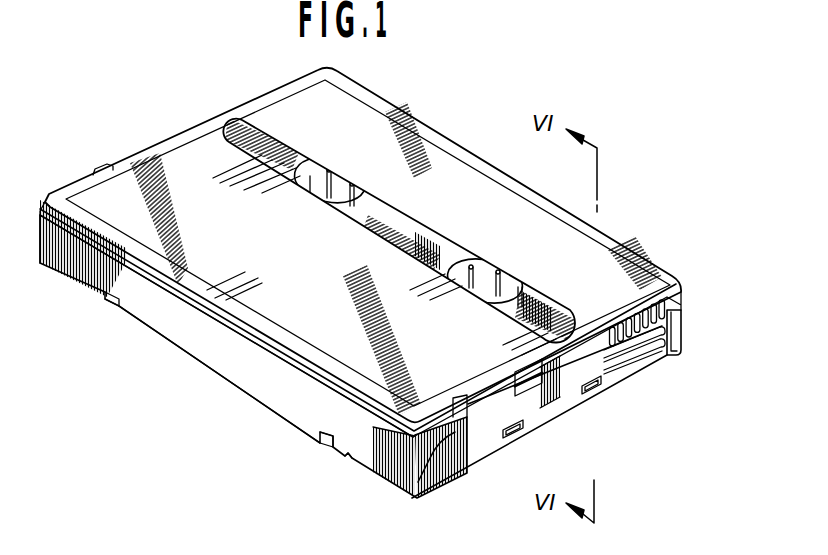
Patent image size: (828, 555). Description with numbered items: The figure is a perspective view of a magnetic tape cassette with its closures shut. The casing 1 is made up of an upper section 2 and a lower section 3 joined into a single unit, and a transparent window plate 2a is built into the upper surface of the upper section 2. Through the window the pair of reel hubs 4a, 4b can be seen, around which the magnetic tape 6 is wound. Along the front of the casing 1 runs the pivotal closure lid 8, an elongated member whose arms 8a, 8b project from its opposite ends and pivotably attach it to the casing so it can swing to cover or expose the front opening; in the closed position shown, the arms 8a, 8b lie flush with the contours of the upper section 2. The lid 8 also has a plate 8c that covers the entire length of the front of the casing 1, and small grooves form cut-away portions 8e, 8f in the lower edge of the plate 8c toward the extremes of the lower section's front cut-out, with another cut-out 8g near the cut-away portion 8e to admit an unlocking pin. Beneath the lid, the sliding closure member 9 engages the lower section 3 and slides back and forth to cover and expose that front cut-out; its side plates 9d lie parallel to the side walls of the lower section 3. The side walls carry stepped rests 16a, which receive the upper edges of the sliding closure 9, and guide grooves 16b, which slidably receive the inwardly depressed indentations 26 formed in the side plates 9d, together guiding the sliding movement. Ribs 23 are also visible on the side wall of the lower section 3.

The casing 1 is at (446, 124).
The upper section 2 is at (683, 284).
The transparent window plate 2a is at (566, 316).
The lower section 3 is at (682, 328).
The reel hub 4a is at (303, 168).
The reel hub 4b is at (477, 257).
The magnetic tape 6 is at (410, 222).
The pivotal closure lid 8 is at (185, 351).
The arm 8a is at (83, 186).
The arm 8b is at (457, 434).
The plate 8c is at (163, 327).
The cut-away portion 8e is at (110, 304).
The cut-away portion 8f is at (328, 447).
The cut-out 8g is at (353, 468).
The sliding closure member 9 is at (557, 413).
The side plate 9d is at (466, 462).
The stepped rest 16a is at (645, 348).
The guide groove 16b is at (633, 372).
The ribs 23 is at (668, 305).
The inwardly depressed indentation 26 is at (594, 390).